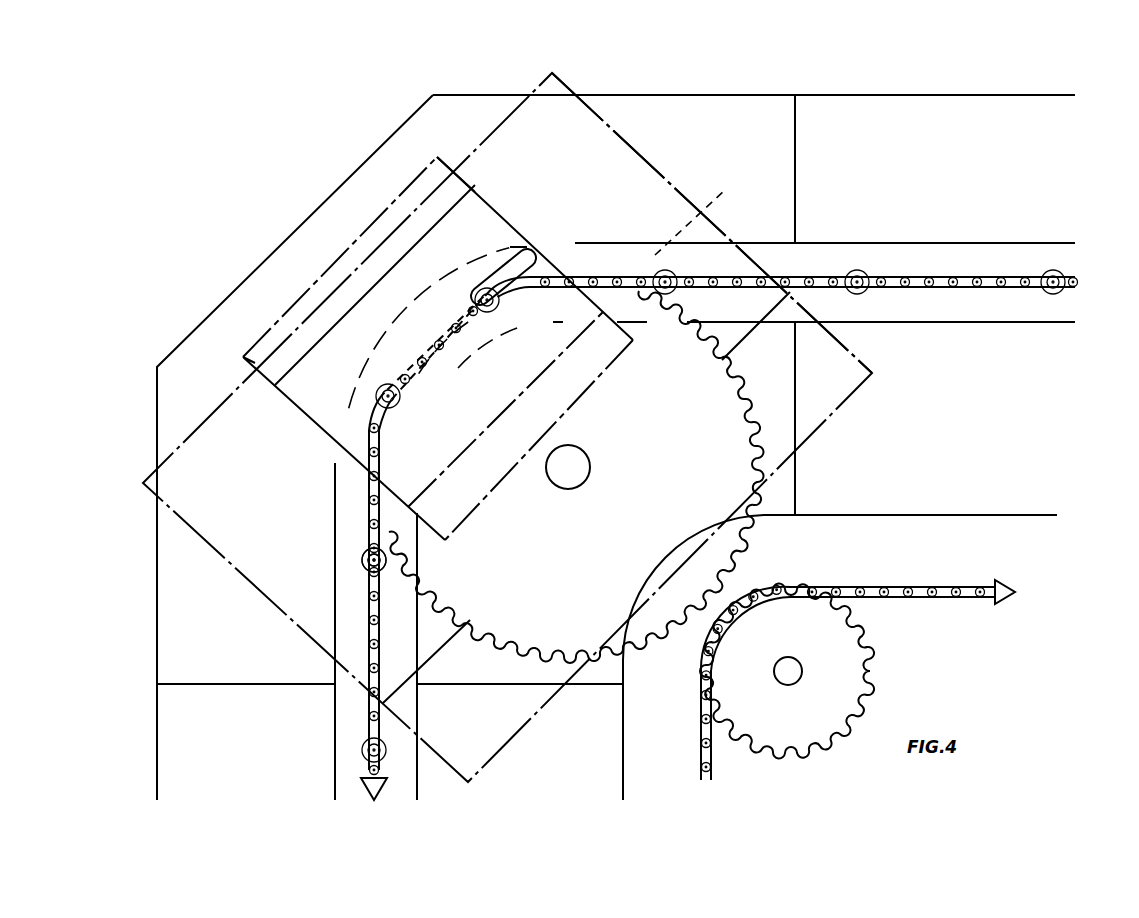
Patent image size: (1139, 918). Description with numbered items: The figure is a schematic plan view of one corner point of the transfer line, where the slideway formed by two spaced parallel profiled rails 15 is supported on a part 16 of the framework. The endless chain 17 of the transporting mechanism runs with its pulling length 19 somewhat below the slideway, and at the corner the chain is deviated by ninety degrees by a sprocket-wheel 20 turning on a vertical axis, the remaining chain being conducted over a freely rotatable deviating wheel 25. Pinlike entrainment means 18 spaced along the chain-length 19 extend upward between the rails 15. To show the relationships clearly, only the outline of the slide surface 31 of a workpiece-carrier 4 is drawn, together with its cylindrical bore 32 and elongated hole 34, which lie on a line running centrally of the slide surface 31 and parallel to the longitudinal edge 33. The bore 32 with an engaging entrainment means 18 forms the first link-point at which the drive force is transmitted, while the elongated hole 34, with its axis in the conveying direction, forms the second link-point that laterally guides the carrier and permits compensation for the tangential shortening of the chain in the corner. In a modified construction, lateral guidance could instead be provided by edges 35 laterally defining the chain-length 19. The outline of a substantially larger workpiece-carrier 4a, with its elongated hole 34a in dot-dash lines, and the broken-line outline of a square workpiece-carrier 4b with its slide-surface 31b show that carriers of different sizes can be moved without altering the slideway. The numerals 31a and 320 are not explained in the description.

The workpiece-carrier 4 is at (433, 225).
The workpiece-carrier of substantially greater dimensions 4a is at (677, 187).
The square workpiece-carrier 4b is at (368, 222).
The profiled rails 15 is at (903, 228).
The part of the framework 16 is at (714, 110).
The endless chain 17 is at (945, 592).
The entrainment means 18 is at (663, 270).
The pulling length of the chain 19 is at (492, 305).
The sprocket-wheel 20 is at (610, 657).
The deviating wheel 25 is at (847, 693).
The sliding undersurface 31 is at (297, 390).
The gate edge 31a is at (845, 365).
The slide-surface of the square workpiece-carrier 31b is at (463, 185).
The cylindrical bore 32 is at (372, 398).
The roller pivot 320 is at (362, 562).
The edge of the workpiece-carrier 33 is at (337, 320).
The elongated hole 34 is at (513, 262).
The elongated hole of the larger workpiece-carrier 34a is at (697, 227).
The edges 35 is at (988, 243).